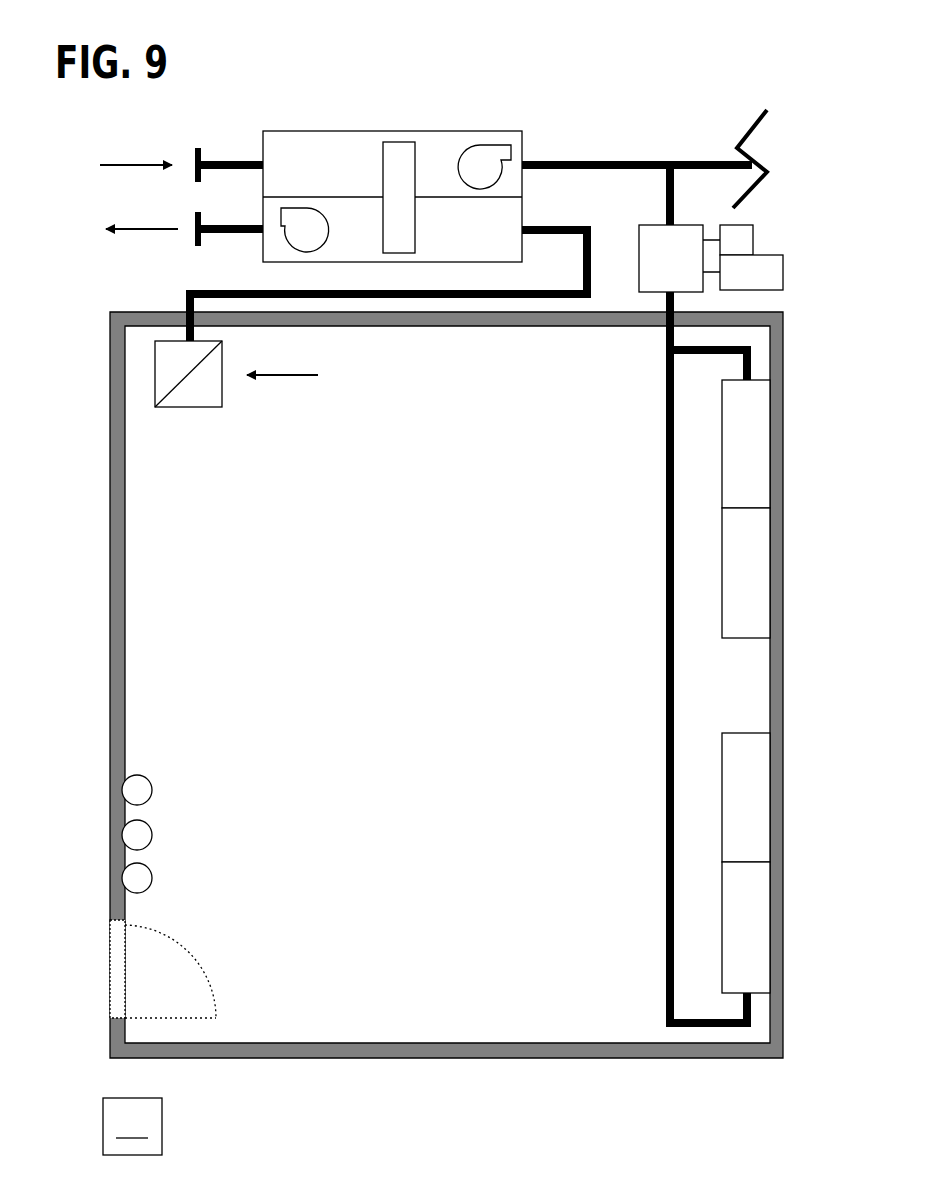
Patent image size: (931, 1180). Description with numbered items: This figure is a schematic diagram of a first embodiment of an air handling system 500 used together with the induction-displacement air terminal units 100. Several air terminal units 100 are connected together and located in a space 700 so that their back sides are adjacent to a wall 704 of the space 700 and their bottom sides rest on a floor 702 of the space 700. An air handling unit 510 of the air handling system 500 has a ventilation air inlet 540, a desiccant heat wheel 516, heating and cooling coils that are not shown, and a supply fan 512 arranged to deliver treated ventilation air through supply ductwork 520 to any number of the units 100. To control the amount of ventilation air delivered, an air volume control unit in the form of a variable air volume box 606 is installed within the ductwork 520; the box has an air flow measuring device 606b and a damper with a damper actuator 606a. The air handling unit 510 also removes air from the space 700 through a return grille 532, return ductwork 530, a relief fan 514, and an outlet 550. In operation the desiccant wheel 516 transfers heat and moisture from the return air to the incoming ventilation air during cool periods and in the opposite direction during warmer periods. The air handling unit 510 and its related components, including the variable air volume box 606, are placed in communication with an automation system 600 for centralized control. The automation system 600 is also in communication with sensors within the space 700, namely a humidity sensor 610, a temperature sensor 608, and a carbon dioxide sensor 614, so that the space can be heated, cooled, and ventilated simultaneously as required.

The air terminal unit 100 is at (730, 449).
The air handling system 500 is at (359, 178).
The air handling unit 510 is at (430, 130).
The supply fan 512 is at (493, 142).
The relief fan 514 is at (310, 252).
The desiccant heat wheel 516 is at (382, 160).
The supply ductwork 520 is at (653, 160).
The ductwork 530 is at (362, 297).
The return grille 532 is at (180, 407).
The ventilation air inlet 540 is at (220, 160).
The outlet 550 is at (215, 227).
The automation system 600 is at (132, 1126).
The variable air volume box 606 is at (679, 258).
The damper with damper actuator 606a is at (747, 225).
The air flow measuring device 606b is at (764, 256).
The temperature sensor 608 is at (152, 834).
The humidity sensor 610 is at (152, 789).
The carbon dioxide sensor 614 is at (152, 879).
The space 700 is at (421, 696).
The floor 702 is at (735, 686).
The wall 704 is at (777, 818).